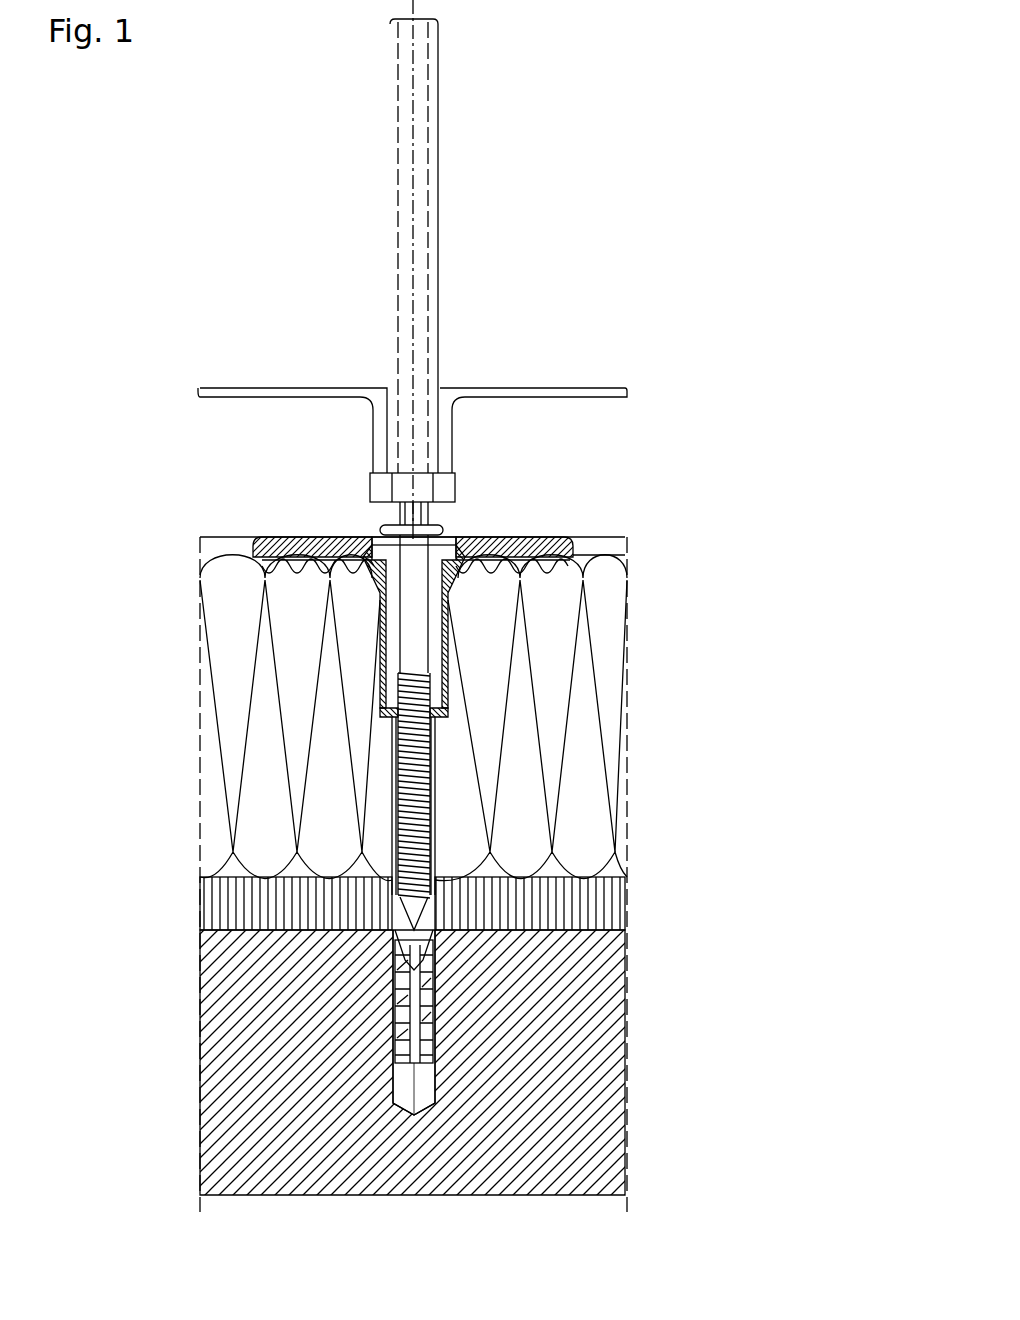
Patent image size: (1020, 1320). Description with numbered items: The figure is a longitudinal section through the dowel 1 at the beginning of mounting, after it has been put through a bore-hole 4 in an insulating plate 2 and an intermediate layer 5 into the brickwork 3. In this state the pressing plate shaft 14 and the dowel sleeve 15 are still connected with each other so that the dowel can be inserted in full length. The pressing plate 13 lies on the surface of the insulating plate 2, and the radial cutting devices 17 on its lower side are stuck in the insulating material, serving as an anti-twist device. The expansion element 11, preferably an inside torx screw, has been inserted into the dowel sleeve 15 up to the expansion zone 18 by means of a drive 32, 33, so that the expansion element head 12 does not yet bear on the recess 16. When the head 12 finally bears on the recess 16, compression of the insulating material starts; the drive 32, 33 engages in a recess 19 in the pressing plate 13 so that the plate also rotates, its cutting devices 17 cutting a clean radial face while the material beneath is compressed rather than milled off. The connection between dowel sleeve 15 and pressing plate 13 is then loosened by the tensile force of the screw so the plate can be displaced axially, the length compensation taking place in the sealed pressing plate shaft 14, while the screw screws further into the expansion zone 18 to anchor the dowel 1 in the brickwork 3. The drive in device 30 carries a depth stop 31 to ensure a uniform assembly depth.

The dowel 1 is at (571, 520).
The insulating plate 2 is at (555, 720).
The brickwork 3 is at (560, 1040).
The bore-hole 4 is at (428, 1085).
The intermediate layer 5 is at (585, 900).
The expansion element 11 is at (408, 660).
The expansion element head 12 is at (447, 530).
The pressing plate 13 is at (272, 540).
The pressing plate shaft 14 is at (385, 612).
The dowel sleeve 15 is at (398, 813).
The recess 16 is at (392, 573).
The cutting devices 17 is at (583, 580).
The expansion zone 18 is at (393, 1003).
The recess 19 is at (555, 538).
The drive in device 30 is at (465, 150).
The depth stop 31 is at (620, 388).
The drive 32 is at (450, 490).
The drive 33 is at (407, 502).